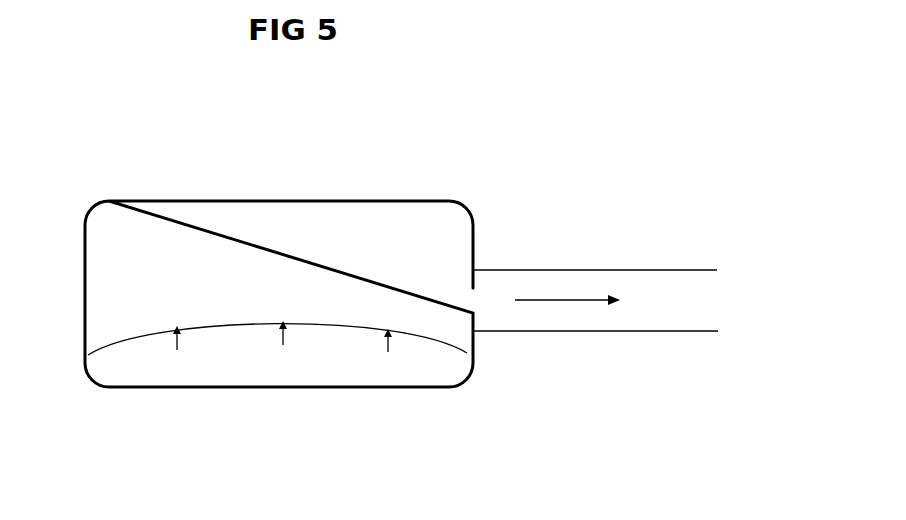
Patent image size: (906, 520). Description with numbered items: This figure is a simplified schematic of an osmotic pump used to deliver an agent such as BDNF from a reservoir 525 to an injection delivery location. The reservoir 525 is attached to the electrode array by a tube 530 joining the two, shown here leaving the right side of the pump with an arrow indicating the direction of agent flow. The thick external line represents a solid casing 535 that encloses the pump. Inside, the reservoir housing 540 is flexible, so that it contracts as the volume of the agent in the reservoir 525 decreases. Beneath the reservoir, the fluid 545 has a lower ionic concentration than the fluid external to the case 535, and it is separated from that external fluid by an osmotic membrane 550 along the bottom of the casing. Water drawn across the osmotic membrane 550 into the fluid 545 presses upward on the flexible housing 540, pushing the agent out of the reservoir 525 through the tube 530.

The reservoir 525 is at (277, 315).
The tube 530 is at (560, 270).
The solid casing 535 is at (328, 201).
The reservoir housing 540 is at (177, 327).
The fluid 545 is at (165, 363).
The osmotic membrane 550 is at (330, 387).